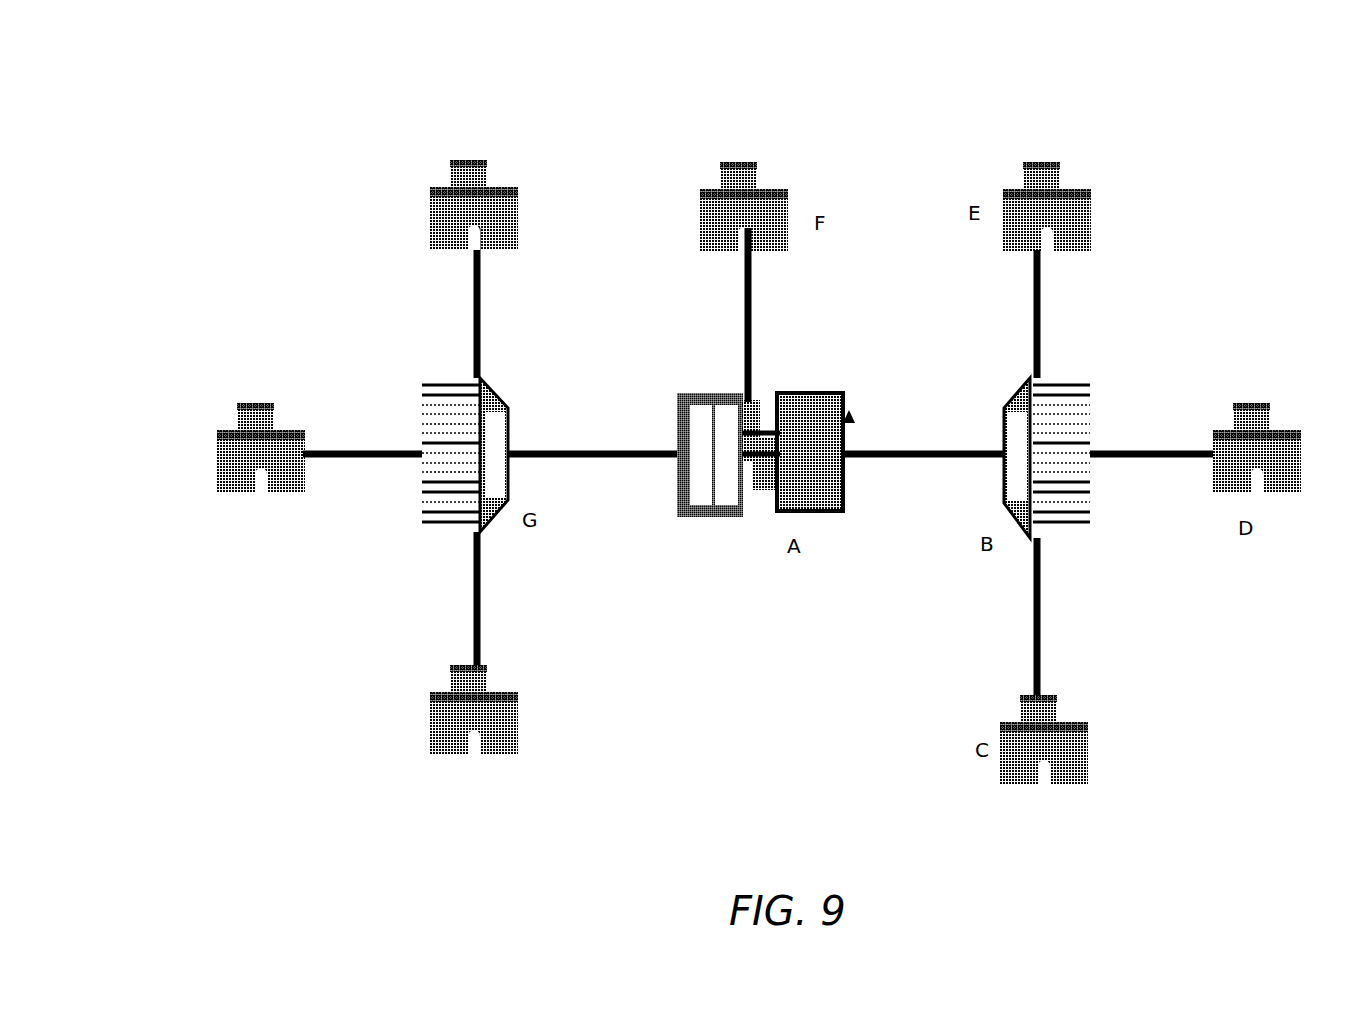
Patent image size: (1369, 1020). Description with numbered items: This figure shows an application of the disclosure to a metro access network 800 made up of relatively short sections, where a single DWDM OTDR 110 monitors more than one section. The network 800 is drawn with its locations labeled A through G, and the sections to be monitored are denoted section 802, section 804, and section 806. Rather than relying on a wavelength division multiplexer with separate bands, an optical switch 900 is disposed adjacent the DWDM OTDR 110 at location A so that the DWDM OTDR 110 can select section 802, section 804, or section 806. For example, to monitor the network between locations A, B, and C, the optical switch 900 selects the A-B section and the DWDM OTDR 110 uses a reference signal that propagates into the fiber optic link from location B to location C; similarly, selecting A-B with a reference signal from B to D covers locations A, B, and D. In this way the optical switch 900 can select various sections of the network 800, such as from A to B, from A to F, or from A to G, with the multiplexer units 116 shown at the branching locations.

The network 800 is at (744, 99).
The section 802 is at (304, 343).
The section 804 is at (1256, 333).
The section 806 is at (669, 235).
The DWDM OTDR 110 is at (715, 390).
The DWDM multiplexer 116 is at (492, 388).
The optical switch 900 is at (820, 390).